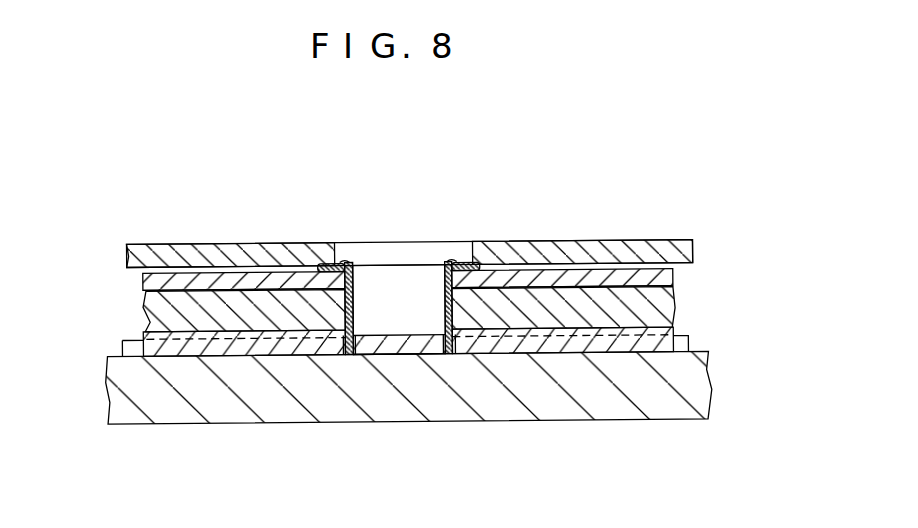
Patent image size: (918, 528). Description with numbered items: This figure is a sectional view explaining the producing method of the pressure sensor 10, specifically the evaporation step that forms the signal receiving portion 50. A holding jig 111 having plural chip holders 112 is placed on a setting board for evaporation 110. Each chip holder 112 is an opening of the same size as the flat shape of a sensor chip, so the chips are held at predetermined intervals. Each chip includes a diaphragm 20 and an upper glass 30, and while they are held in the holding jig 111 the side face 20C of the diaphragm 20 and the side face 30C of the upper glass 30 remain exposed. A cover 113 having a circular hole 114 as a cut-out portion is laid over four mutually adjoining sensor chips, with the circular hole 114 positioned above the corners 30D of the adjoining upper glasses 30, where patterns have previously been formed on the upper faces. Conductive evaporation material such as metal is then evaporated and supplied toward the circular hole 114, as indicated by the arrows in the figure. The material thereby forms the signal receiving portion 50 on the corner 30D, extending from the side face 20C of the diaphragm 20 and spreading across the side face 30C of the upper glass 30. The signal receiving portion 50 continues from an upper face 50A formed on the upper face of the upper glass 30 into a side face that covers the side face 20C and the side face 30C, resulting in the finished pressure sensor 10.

The setting board for evaporation 110 is at (624, 412).
The holding jig 111 is at (377, 357).
The chip holder 112 is at (347, 355).
The cover 113 is at (163, 250).
The circular hole 114 is at (397, 250).
The pressure sensor 10 is at (210, 280).
The diaphragm 20 is at (155, 313).
The side face of the diaphragm 20C is at (420, 334).
The upper glass 30 is at (142, 283).
The side face of the upper glass 30C is at (405, 167).
The corner of the upper glass 30D is at (343, 262).
The signal receiving portion 50 is at (345, 258).
The upper face of the signal receiving portion 50A is at (322, 268).